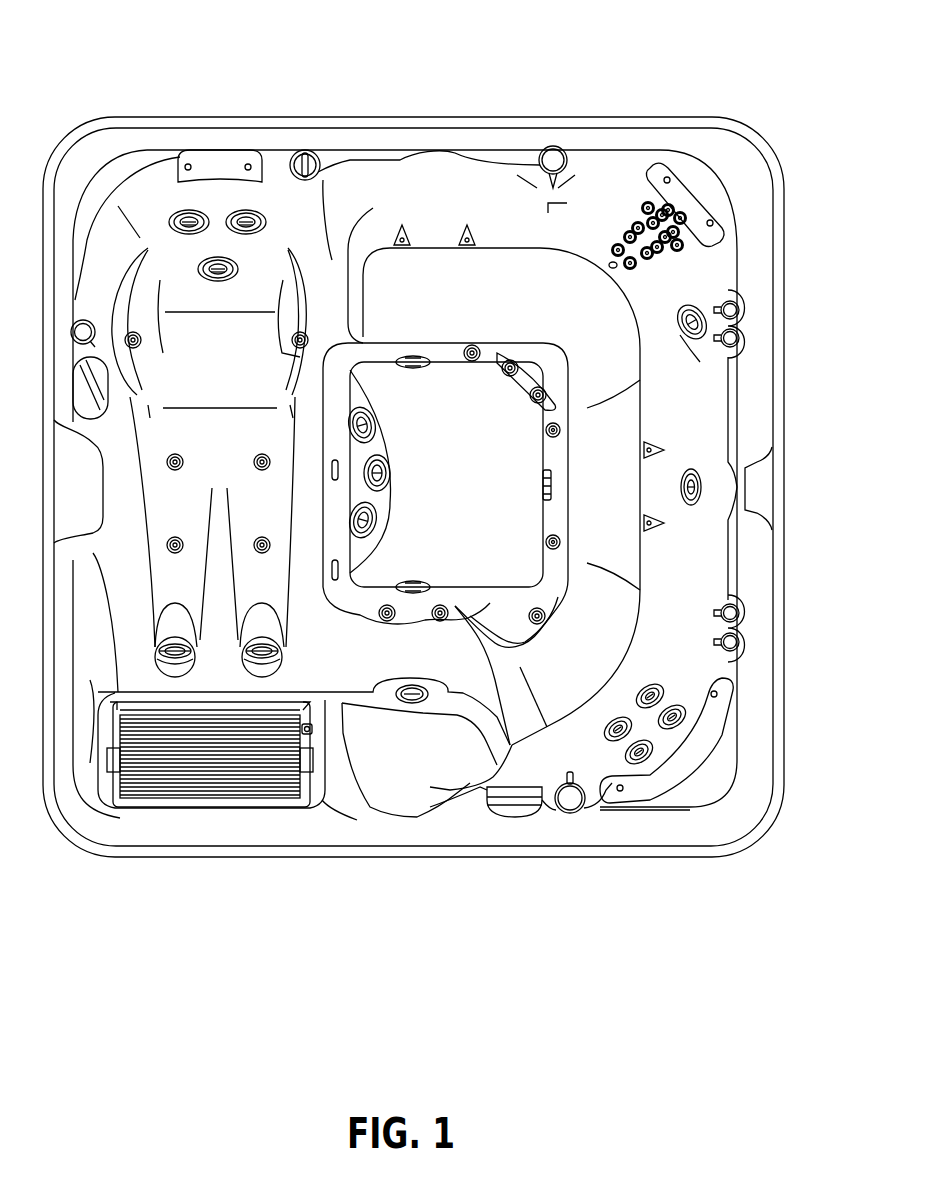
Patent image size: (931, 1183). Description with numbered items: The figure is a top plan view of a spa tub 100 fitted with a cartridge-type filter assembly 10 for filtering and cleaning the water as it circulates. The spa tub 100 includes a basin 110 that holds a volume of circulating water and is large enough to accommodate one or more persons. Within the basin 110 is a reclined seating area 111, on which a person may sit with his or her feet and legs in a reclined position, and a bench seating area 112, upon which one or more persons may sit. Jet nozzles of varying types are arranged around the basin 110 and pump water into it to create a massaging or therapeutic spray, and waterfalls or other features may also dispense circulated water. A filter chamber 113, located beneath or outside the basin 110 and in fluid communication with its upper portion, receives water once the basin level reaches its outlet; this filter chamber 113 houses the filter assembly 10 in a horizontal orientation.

The spa tub 100 is at (193, 88).
The reclined seating area 111 is at (244, 382).
The bench seating area 112 is at (601, 328).
The basin 110 is at (496, 495).
The filter assembly 10 is at (248, 806).
The filter chamber 113 is at (312, 792).